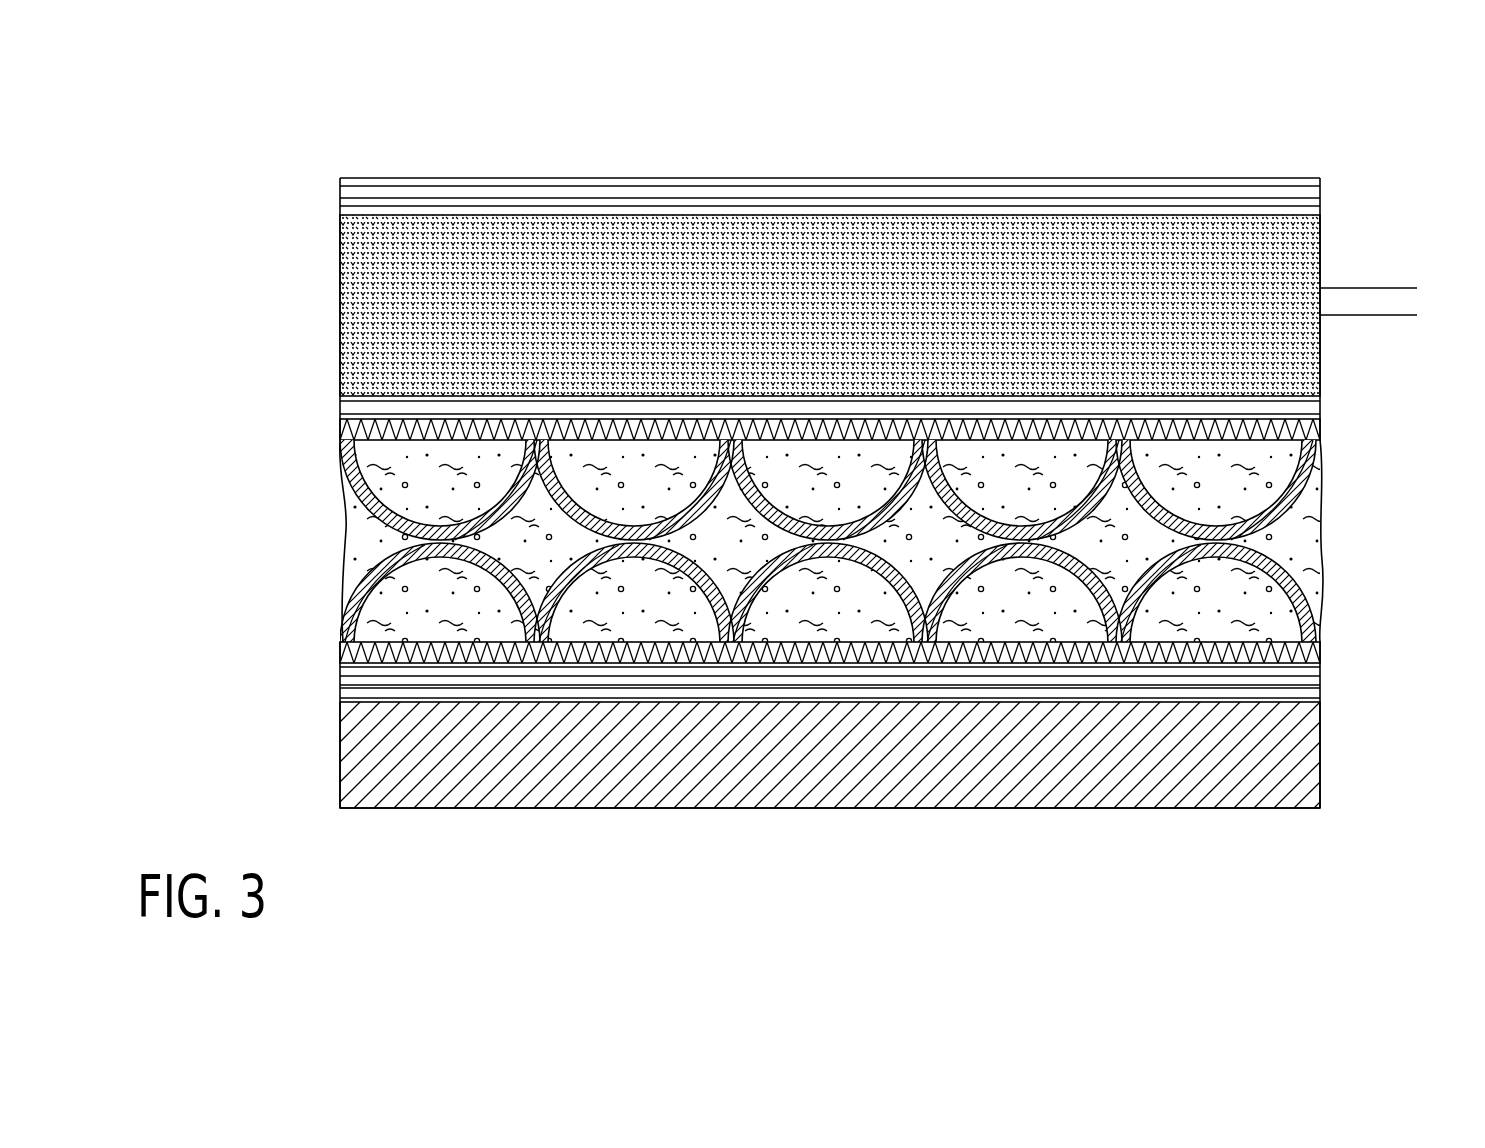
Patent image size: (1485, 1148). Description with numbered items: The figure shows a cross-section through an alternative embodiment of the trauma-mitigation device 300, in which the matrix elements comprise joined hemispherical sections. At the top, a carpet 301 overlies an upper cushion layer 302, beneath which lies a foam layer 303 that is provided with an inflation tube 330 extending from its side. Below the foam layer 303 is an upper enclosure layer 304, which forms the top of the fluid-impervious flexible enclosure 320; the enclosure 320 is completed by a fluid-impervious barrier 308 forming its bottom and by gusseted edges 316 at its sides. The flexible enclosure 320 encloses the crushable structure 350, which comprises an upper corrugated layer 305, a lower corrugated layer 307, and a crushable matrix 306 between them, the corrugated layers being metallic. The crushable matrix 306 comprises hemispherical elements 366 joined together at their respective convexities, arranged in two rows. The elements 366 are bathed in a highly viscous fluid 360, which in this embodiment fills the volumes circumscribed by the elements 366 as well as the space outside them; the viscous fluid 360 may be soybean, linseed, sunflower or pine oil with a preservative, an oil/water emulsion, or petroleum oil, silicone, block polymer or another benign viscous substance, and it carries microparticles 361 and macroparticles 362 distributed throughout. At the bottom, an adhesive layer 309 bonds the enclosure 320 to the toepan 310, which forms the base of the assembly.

The trauma-mitigation device 300 is at (217, 852).
The carpet 301 is at (340, 178).
The upper cushion layer 302 is at (340, 198).
The foam layer 303 is at (343, 297).
The upper enclosure layer 304 is at (340, 398).
The upper corrugated layer 305 is at (340, 430).
The crushable matrix 306 is at (365, 580).
The lower corrugated layer 307 is at (340, 652).
The fluid-impervious barrier 308 is at (340, 670).
The adhesive layer 309 is at (340, 688).
The toepan 310 is at (353, 770).
The gusseted edges 316 is at (1321, 560).
The fluid-impervious flexible enclosure 320 is at (841, 541).
The inflation tube 330 is at (1330, 288).
The crushable structure 350 is at (1303, 477).
The viscous fluid 360 is at (1305, 515).
The microparticles 361 is at (358, 535).
The macroparticles 362 is at (342, 480).
The hemispherical elements 366 is at (1318, 598).